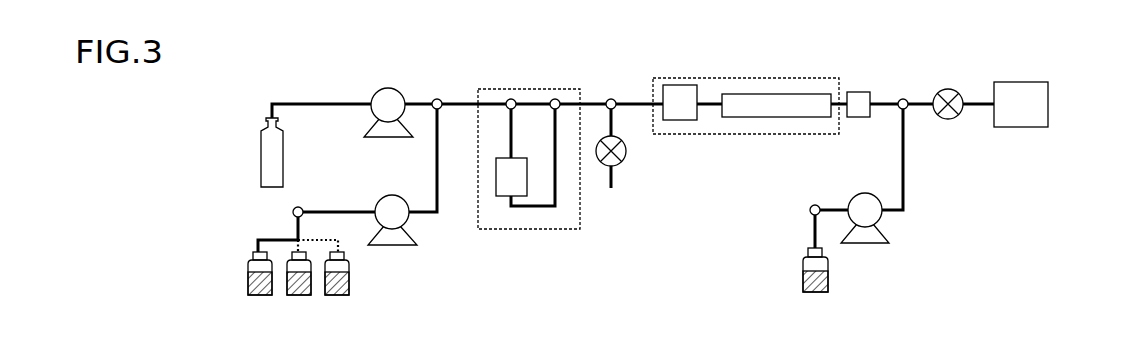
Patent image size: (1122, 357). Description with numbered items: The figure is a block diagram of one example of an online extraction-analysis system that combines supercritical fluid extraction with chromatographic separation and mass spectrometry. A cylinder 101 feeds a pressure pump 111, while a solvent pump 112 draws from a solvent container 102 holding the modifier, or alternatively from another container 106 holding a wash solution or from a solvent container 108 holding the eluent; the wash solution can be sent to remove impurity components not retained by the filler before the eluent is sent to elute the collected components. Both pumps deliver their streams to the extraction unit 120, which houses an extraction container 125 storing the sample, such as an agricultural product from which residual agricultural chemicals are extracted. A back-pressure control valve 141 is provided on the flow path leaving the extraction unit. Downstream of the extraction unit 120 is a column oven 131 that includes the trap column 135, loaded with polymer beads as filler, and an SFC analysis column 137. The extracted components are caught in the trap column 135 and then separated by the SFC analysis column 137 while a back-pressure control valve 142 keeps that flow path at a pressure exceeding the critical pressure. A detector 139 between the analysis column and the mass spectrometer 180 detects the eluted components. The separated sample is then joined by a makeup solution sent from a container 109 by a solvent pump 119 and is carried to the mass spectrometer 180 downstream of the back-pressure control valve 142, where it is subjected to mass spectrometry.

The cylinder 101 is at (262, 161).
The pressure pump 111 is at (383, 97).
The solvent pump 112 is at (385, 203).
The solvent container 102 is at (258, 296).
The solvent container 106 is at (298, 296).
The solvent container 108 is at (334, 296).
The extraction unit 120 is at (489, 87).
The extraction container 125 is at (518, 162).
The back-pressure control valve 141 is at (614, 164).
The column oven 131 is at (664, 75).
The trap column 135 is at (683, 112).
The SFC analysis column 137 is at (773, 112).
The detector 139 is at (857, 117).
The solvent pump 119 is at (858, 203).
The solvent container 109 is at (815, 293).
The back-pressure control valve 142 is at (949, 116).
The mass spectrometer 180 is at (1022, 122).